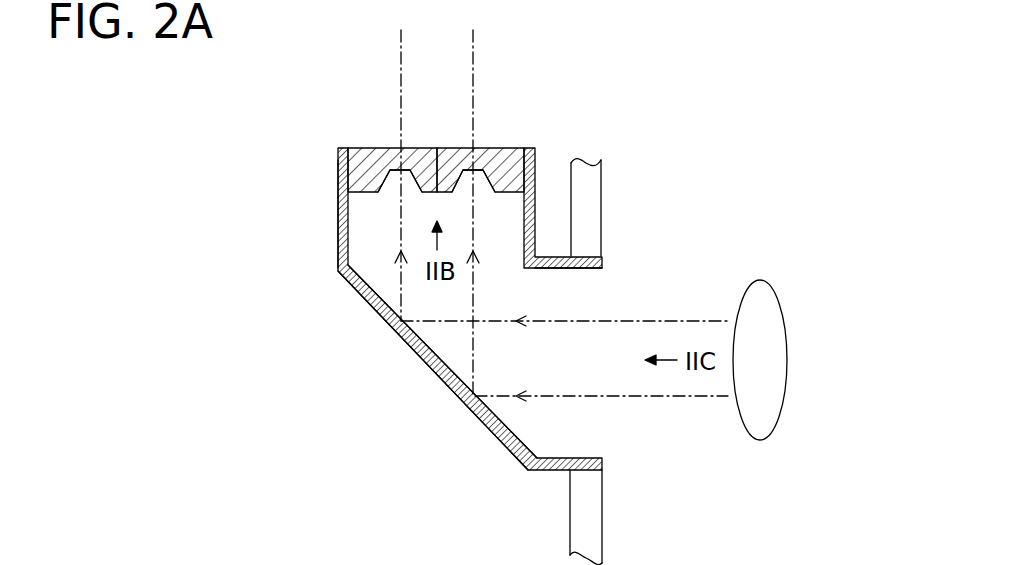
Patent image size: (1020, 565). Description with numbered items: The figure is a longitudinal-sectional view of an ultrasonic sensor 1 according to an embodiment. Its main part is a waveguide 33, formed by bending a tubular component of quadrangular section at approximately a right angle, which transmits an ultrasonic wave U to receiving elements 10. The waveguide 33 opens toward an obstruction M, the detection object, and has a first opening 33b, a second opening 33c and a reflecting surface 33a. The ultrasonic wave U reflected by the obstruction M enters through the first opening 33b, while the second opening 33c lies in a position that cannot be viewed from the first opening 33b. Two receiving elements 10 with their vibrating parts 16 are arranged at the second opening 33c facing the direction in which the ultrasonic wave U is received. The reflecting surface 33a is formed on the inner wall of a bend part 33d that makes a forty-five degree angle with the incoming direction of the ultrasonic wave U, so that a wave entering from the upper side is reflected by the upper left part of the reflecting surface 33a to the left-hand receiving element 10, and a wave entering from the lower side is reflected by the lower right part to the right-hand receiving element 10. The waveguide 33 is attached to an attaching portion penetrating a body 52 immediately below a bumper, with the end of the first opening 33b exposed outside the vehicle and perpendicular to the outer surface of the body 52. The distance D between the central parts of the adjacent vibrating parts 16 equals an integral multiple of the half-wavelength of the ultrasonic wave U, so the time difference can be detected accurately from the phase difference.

The recording apparatus 1 is at (569, 83).
The receiving element 10 is at (362, 148).
The vibrating part 16 is at (397, 167).
The waveguide 33 is at (438, 450).
The reflecting surface 33a is at (369, 303).
The first opening 33b is at (602, 268).
The second opening 33c is at (344, 230).
The bend part 33d is at (443, 382).
The body 52 is at (592, 198).
The distance D is at (473, 42).
The ultrasonic wave U is at (670, 318).
The obstruction M is at (782, 310).